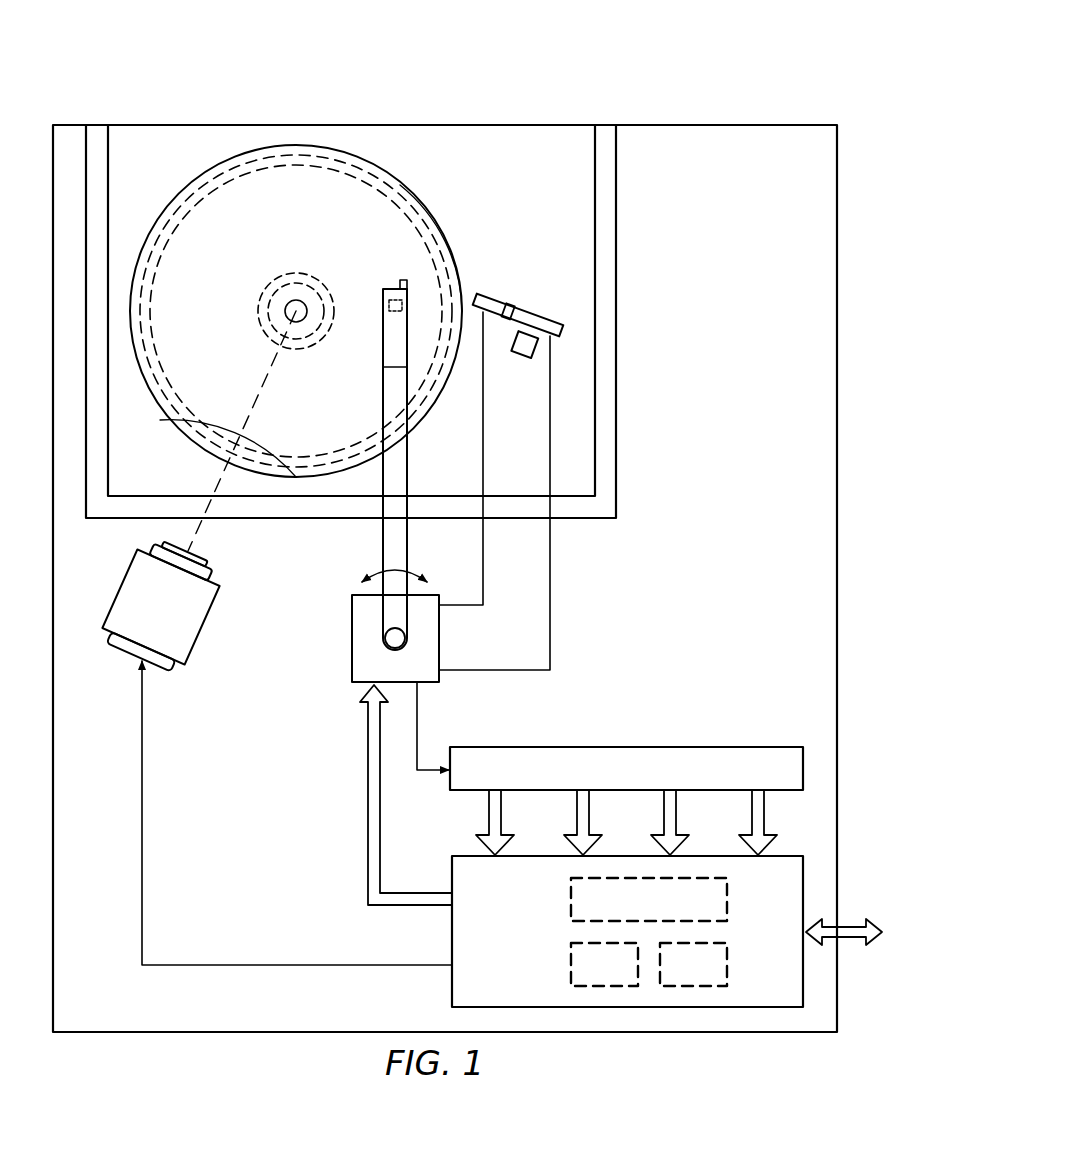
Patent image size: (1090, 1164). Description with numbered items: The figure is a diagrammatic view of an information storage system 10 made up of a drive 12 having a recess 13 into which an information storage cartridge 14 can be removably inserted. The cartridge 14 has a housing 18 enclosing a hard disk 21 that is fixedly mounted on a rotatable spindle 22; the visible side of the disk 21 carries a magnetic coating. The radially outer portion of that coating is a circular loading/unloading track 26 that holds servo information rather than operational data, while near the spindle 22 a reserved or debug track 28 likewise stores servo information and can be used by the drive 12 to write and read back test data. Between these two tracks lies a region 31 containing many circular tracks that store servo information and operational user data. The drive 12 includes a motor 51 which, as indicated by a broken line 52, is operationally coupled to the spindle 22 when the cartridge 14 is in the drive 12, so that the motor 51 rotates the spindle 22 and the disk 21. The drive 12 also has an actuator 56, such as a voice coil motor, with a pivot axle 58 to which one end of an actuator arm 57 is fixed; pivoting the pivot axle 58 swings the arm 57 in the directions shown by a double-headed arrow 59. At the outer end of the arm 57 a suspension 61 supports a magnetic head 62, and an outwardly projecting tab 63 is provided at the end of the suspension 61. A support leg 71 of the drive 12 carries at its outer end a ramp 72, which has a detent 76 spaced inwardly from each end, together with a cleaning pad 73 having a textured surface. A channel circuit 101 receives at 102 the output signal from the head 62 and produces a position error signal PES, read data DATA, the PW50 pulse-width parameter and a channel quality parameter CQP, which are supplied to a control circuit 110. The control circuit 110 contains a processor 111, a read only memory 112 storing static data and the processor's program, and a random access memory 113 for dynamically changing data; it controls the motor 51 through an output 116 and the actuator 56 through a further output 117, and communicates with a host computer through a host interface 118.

The information storage system 10 is at (868, 64).
The drive 12 is at (750, 123).
The recess 13 is at (617, 200).
The information storage cartridge 14 is at (507, 123).
The housing 18 is at (198, 133).
The hard disk 21 is at (440, 217).
The spindle 22 is at (296, 306).
The loading/unloading track 26 is at (180, 215).
The reserved track 28 is at (266, 316).
The region 31 is at (228, 363).
The motor 51 is at (120, 588).
The broken line 52 is at (206, 533).
The actuator 56 is at (348, 660).
The actuator arm 57 is at (383, 395).
The pivot axle 58 is at (390, 636).
The double-headed arrow 59 is at (382, 577).
The suspension 61 is at (388, 350).
The magnetic head 62 is at (389, 305).
The tab 63 is at (403, 280).
The support leg 71 is at (550, 578).
The ramp 72 is at (545, 318).
The cleaning pad 73 is at (522, 362).
The detent 76 is at (507, 306).
The channel circuit 101 is at (701, 747).
The output signal input 102 is at (420, 700).
The control circuit 110 is at (449, 985).
The processor 111 is at (728, 900).
The read only memory 112 is at (728, 965).
The random access memory 113 is at (571, 963).
The output 116 is at (142, 828).
The output 117 is at (368, 828).
The host interface 118 is at (848, 922).